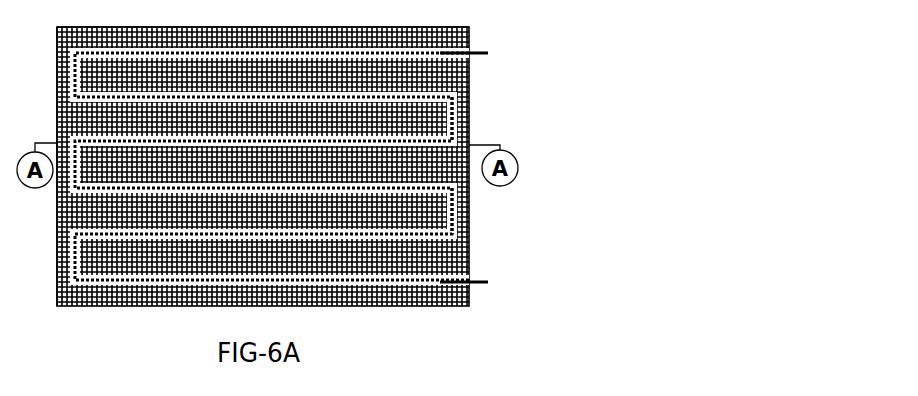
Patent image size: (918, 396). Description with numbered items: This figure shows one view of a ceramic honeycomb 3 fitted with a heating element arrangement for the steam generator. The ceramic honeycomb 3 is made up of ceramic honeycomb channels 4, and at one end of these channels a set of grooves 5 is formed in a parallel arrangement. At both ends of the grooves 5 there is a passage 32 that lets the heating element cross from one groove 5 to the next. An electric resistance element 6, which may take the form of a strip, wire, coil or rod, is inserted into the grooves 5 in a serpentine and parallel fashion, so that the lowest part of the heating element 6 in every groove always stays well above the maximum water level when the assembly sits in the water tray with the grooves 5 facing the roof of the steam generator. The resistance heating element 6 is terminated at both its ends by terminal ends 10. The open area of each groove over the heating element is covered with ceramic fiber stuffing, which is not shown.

The ceramic honeycomb 3 is at (471, 257).
The ceramic honeycomb channels 4 is at (466, 41).
The grooves 5 is at (456, 213).
The electric resistance element 6 is at (462, 98).
The terminal ends 10 is at (497, 282).
The passage 32 is at (459, 128).